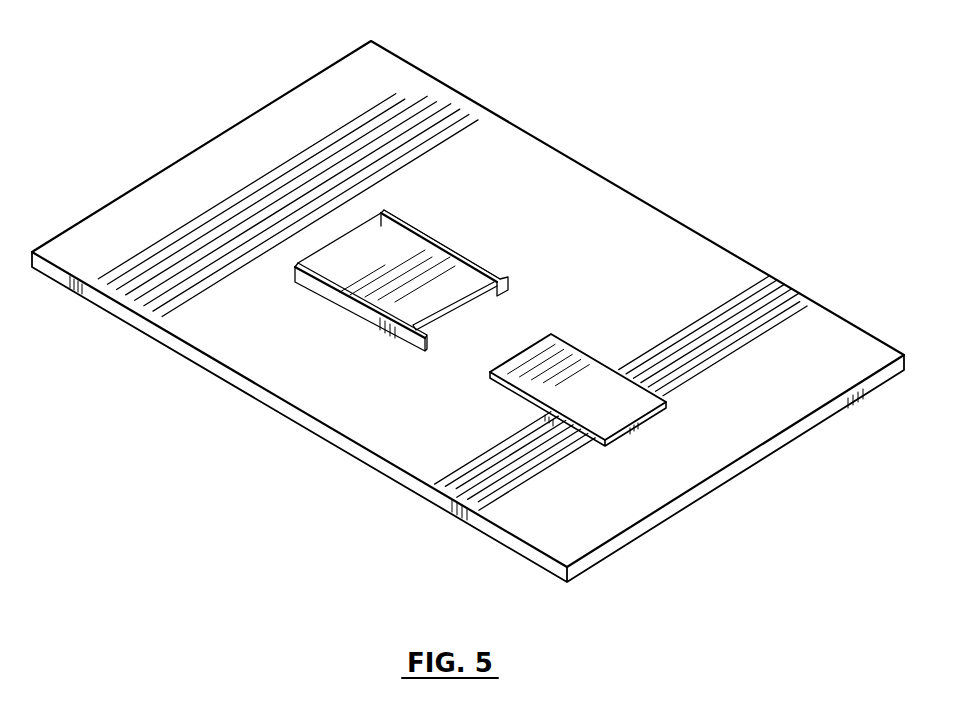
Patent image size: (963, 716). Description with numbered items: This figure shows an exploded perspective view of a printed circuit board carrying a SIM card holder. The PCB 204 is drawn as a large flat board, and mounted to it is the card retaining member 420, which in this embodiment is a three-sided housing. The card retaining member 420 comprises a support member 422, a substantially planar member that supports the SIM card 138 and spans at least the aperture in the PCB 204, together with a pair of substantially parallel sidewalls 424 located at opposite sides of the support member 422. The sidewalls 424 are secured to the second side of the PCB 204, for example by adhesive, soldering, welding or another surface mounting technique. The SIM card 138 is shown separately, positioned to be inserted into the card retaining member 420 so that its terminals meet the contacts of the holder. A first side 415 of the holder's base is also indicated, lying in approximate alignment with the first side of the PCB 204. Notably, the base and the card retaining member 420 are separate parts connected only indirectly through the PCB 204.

The PCB 204 is at (441, 88).
The first side 415 is at (404, 222).
The card retaining member 420 is at (414, 260).
The support member 422 is at (443, 263).
The sidewalls 424 is at (355, 308).
The SIM card 138 is at (593, 376).